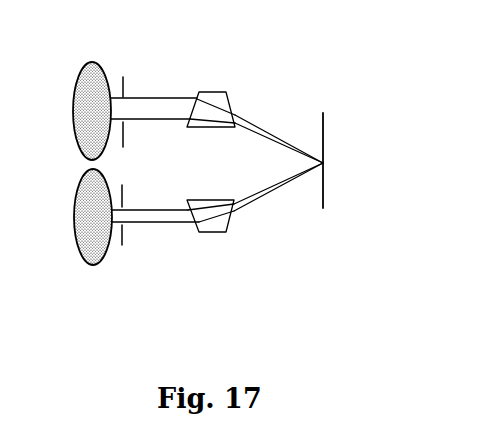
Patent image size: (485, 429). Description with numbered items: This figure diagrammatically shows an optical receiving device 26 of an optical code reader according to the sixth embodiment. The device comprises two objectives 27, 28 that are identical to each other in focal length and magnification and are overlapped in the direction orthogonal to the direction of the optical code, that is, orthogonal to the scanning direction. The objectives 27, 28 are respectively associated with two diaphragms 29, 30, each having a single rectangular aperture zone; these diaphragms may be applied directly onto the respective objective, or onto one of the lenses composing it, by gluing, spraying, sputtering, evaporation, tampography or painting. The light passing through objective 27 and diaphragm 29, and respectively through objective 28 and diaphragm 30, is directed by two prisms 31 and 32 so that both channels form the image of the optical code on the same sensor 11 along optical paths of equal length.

The sensor 11 is at (324, 137).
The optical receiving device 26 is at (304, 325).
The objective 27 is at (72, 104).
The objective 28 is at (75, 225).
The diaphragm 29 is at (126, 94).
The diaphragm 30 is at (126, 227).
The prism 31 is at (226, 93).
The prism 32 is at (226, 233).